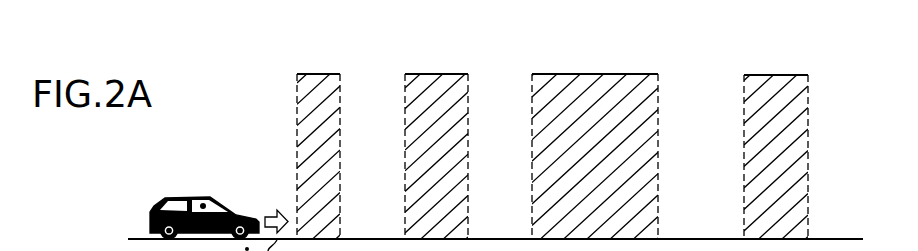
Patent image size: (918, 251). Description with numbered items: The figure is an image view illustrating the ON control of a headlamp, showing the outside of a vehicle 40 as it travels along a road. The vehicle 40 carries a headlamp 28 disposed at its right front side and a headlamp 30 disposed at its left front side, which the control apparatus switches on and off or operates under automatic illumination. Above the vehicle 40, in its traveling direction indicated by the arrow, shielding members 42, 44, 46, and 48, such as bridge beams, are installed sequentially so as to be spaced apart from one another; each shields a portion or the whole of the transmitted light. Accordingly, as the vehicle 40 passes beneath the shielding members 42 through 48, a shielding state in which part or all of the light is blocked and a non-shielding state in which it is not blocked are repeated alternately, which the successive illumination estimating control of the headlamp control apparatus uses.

The vehicle 40 is at (189, 197).
The headlamp 28 is at (259, 213).
The headlamp 30 is at (260, 203).
The shielding member 42 is at (321, 74).
The shielding member 44 is at (444, 74).
The shielding member 46 is at (623, 74).
The shielding member 48 is at (786, 75).